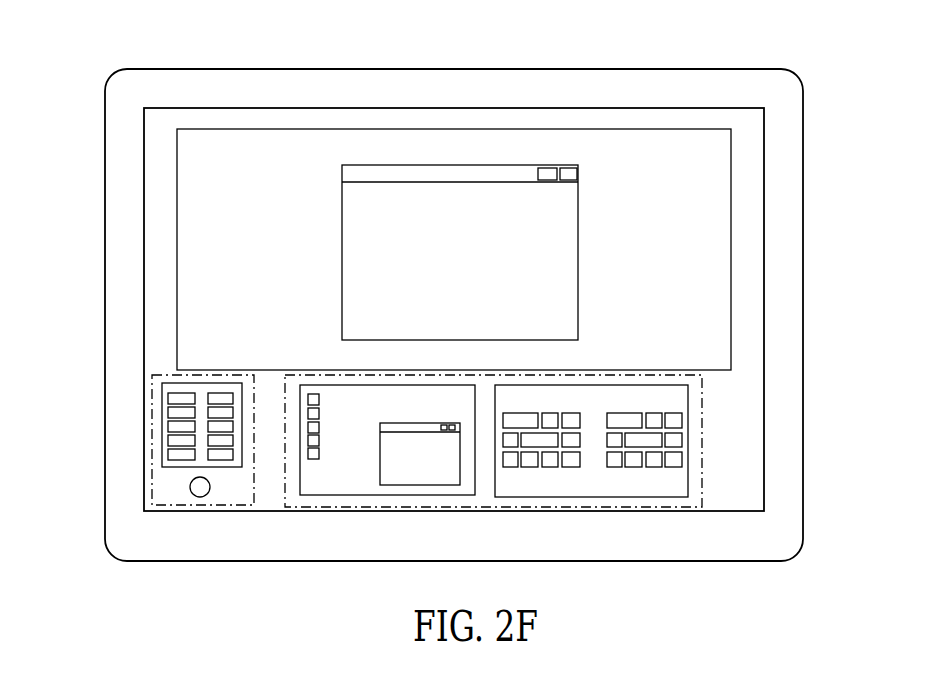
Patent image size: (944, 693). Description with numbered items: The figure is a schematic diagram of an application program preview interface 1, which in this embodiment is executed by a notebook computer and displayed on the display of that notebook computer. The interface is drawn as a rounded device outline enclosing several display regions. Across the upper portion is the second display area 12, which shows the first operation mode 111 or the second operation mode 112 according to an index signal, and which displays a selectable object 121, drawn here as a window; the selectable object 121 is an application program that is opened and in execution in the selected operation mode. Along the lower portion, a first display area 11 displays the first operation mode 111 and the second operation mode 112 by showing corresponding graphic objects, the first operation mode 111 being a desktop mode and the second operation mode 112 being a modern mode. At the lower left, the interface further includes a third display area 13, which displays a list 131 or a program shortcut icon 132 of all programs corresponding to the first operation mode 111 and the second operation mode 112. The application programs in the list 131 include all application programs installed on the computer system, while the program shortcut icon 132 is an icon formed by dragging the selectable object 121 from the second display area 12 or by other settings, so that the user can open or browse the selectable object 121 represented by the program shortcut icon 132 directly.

The application program preview interface 1 is at (133, 42).
The first display area 11 is at (705, 453).
The first operation mode 111 is at (343, 483).
The second operation mode 112 is at (609, 483).
The second display area 12 is at (672, 130).
The selectable object 121 is at (580, 265).
The third display area 13 is at (160, 373).
The list 131 is at (175, 427).
The program shortcut icon 132 is at (200, 497).